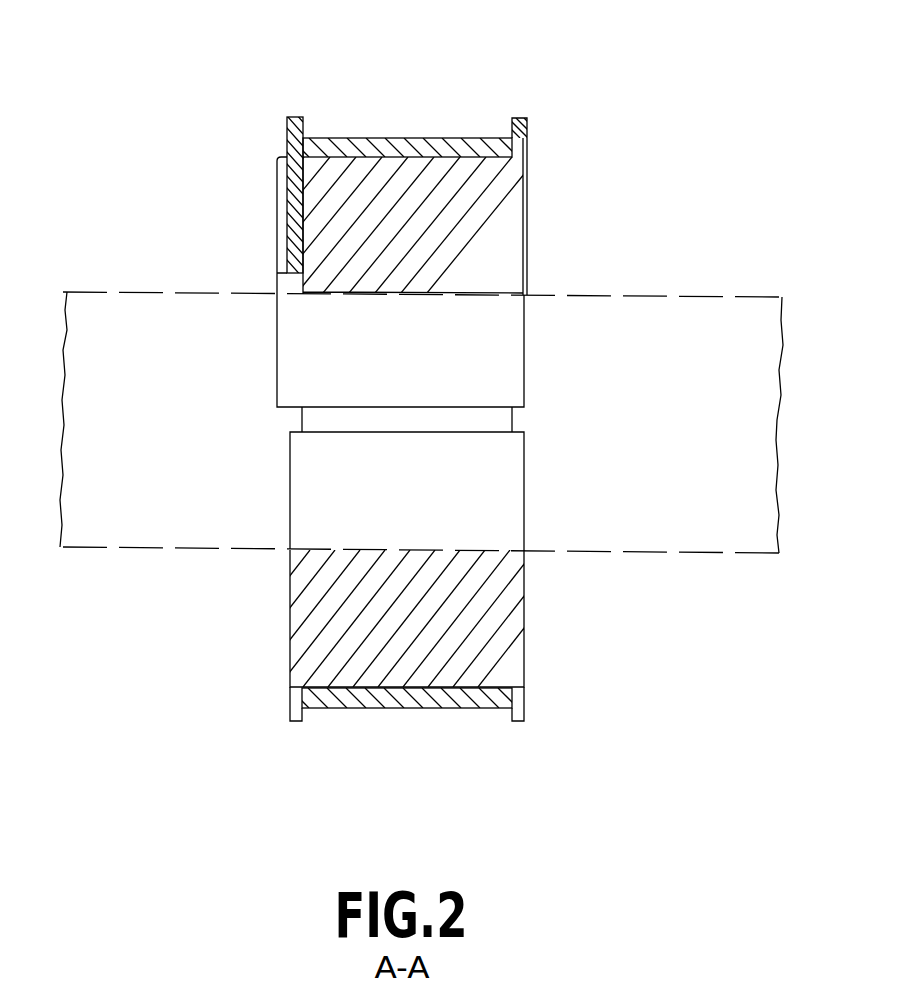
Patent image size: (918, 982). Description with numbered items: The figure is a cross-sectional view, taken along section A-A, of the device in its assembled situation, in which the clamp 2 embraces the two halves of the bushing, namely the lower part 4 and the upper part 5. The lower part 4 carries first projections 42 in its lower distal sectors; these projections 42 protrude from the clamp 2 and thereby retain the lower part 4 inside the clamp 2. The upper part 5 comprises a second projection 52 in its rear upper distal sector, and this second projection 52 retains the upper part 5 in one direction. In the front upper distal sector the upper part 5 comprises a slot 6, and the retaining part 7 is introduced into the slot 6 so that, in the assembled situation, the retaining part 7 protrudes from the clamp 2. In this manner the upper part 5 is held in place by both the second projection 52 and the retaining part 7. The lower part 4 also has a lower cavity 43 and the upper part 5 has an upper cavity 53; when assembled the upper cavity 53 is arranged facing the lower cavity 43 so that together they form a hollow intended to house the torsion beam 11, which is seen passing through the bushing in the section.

The clamp 2 is at (400, 137).
The lower part 4 is at (333, 615).
The upper part 5 is at (466, 217).
The slot 6 is at (277, 268).
The retaining part 7 is at (288, 112).
The torsion beam 11 is at (688, 297).
The first projections 42 is at (287, 716).
The lower cavity 43 is at (457, 502).
The second projection 52 is at (528, 118).
The upper cavity 53 is at (313, 340).